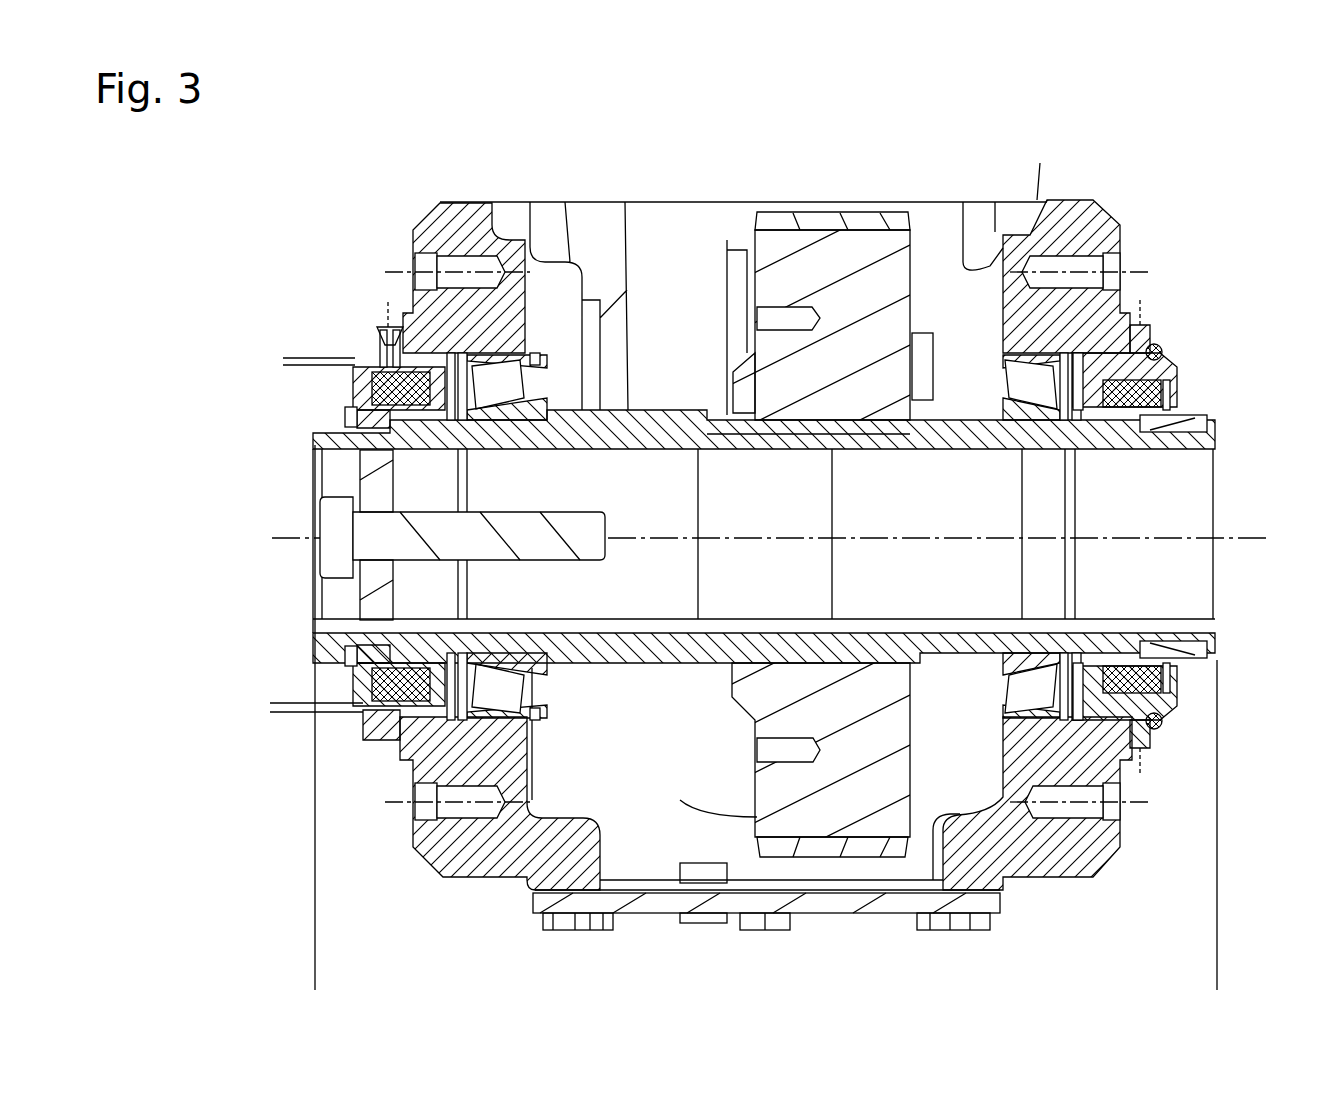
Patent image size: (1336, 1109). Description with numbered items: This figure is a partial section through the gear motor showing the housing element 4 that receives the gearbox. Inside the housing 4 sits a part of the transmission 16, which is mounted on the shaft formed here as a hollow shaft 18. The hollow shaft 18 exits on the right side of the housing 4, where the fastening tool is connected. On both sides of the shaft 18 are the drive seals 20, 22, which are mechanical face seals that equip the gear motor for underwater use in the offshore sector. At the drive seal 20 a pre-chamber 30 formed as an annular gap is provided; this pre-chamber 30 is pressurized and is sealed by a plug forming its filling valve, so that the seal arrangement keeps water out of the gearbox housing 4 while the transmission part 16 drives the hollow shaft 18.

The housing element 4 is at (1090, 307).
The part of the transmission 16 is at (855, 255).
The hollow shaft 18 is at (1185, 415).
The drive seal 20 is at (1177, 370).
The drive seal 22 is at (357, 367).
The pre-chamber 30 is at (1160, 347).